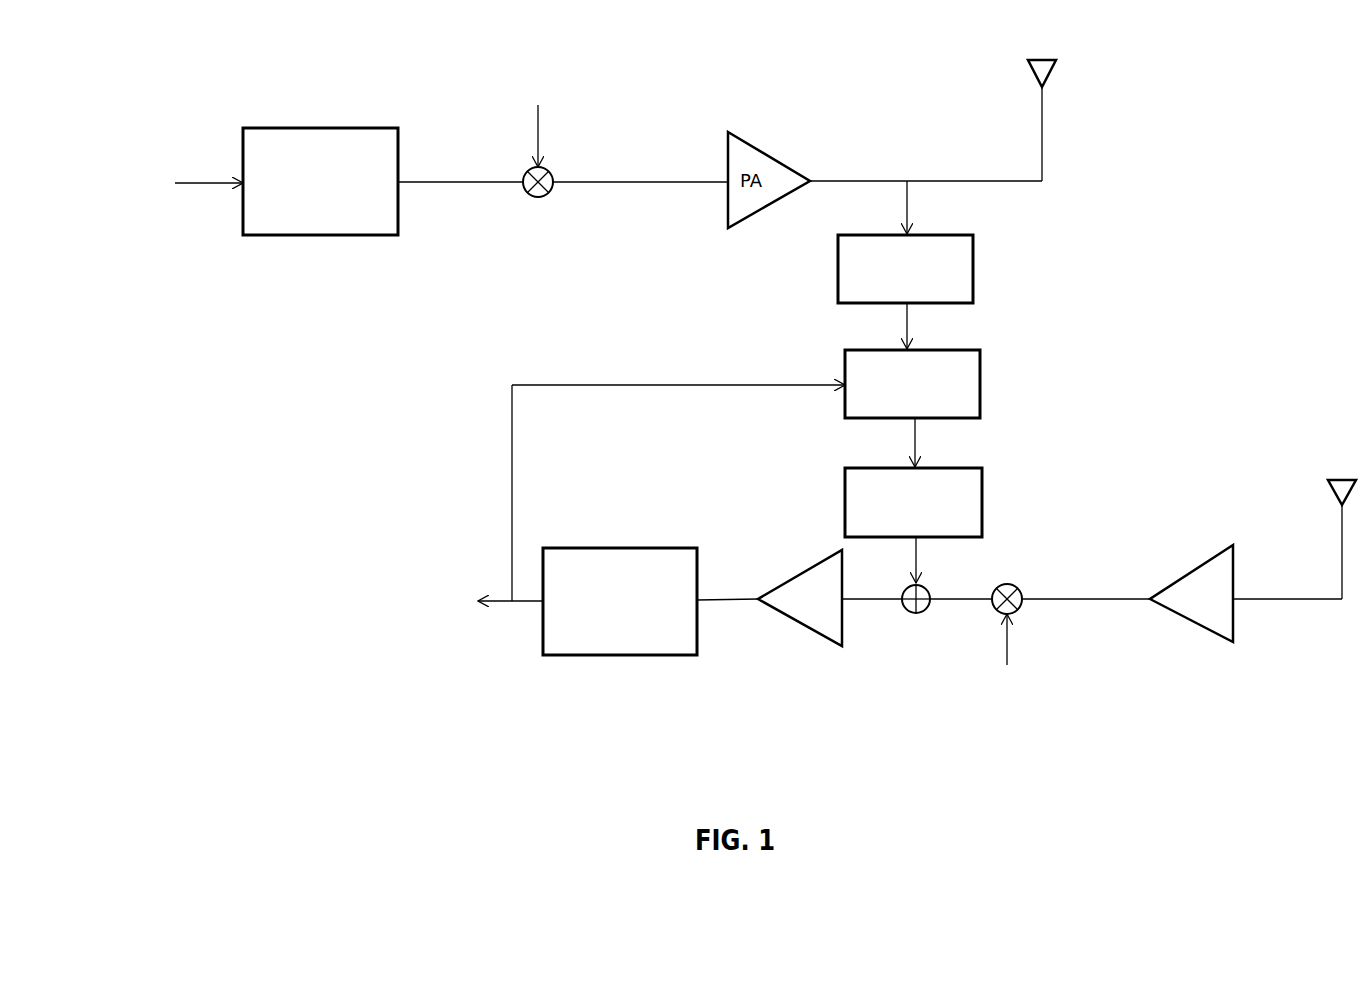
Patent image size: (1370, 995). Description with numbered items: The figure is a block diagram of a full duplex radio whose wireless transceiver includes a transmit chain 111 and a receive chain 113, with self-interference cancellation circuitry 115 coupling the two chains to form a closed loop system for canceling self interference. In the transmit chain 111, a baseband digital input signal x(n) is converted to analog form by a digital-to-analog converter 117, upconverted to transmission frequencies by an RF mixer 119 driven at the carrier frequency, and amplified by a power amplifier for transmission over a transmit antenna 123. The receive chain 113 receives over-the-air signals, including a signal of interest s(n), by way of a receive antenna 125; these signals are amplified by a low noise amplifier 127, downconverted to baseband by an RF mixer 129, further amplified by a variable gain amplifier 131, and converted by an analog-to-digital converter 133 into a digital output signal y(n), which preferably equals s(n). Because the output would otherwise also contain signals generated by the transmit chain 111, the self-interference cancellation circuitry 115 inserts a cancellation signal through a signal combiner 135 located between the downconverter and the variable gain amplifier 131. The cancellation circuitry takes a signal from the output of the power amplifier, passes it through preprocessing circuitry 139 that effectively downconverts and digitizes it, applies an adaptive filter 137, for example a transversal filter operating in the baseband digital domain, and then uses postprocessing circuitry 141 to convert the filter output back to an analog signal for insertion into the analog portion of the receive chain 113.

The transmit chain 111 is at (184, 116).
The receive chain 113 is at (474, 684).
The self-interference cancellation circuitry 115 is at (745, 448).
The digital-to-analog converter 117 is at (347, 127).
The RF mixer 119 is at (550, 195).
The transmit antenna 123 is at (1052, 73).
The receive antenna 125 is at (1338, 478).
The low noise amplifier 127 is at (1192, 568).
The RF mixer 129 is at (1017, 588).
The variable gain amplifier 131 is at (800, 626).
The analog-to-digital converter 133 is at (618, 657).
The signal combiner 135 is at (928, 610).
The adaptive filter 137 is at (982, 383).
The preprocessing circuitry 139 is at (975, 268).
The postprocessing circuitry 141 is at (985, 502).